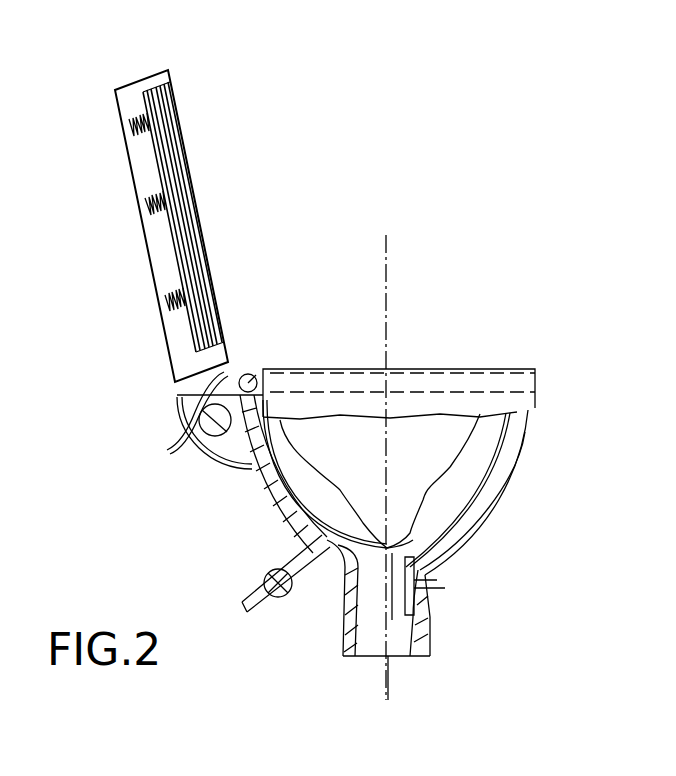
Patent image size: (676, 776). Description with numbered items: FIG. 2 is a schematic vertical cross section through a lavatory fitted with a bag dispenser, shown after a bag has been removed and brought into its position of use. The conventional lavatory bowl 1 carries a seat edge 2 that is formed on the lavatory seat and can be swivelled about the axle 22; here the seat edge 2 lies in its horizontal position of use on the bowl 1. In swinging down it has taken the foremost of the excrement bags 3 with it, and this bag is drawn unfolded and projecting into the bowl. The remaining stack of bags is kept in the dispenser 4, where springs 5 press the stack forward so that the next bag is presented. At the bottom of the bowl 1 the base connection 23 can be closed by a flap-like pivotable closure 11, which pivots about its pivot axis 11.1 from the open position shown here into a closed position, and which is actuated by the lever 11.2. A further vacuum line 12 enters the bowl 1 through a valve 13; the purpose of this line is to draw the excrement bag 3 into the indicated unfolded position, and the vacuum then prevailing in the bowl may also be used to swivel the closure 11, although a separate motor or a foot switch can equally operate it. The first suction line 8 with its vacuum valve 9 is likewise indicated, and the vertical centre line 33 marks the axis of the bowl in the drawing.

The lavatory bowl 1 is at (518, 443).
The seat edge 2 is at (522, 370).
The excrement bag 3 is at (190, 187).
The dispenser 4 is at (98, 90).
The springs 5 is at (143, 222).
The first suction line 8 is at (170, 442).
The vacuum valve 9 is at (217, 428).
The pivotable closure 11 is at (418, 602).
The pivot axis 11.1 is at (407, 657).
The lever 11.2 is at (437, 580).
The vacuum line 12 is at (242, 603).
The valve 13 is at (267, 570).
The axle 22 is at (250, 375).
The base connection 23 is at (425, 635).
The center axis 33 is at (388, 257).